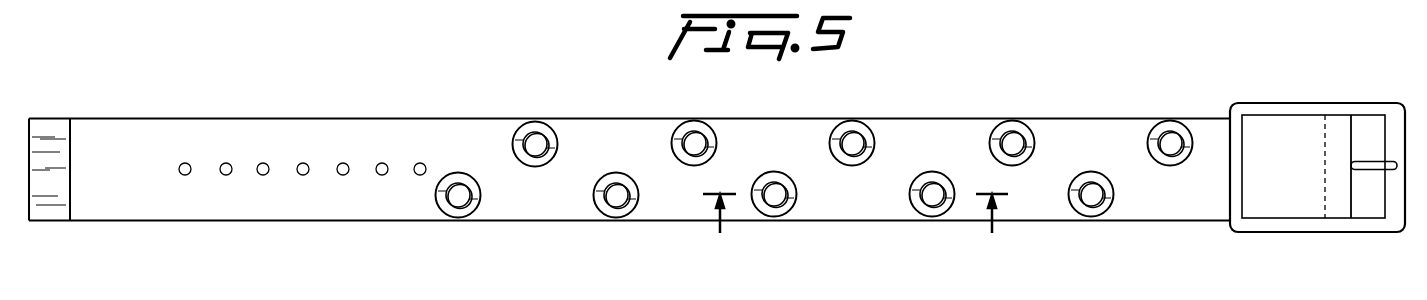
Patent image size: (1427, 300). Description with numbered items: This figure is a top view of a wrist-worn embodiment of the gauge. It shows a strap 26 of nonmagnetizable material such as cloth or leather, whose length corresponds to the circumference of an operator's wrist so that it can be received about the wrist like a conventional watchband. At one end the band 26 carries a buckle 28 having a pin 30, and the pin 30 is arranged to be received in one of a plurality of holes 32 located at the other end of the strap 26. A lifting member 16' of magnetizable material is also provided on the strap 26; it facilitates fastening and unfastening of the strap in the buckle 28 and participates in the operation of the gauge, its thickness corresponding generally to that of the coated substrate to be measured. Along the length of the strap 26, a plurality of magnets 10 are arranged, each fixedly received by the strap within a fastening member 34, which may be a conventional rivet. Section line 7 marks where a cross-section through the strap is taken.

The magnet 10 is at (538, 134).
The lifting member 16' is at (70, 139).
The strap 26 is at (923, 118).
The buckle 28 is at (1283, 103).
The pin 30 is at (1375, 172).
The holes 32 is at (187, 165).
The fastening member 34 is at (553, 131).
The section line 7- 7 is at (855, 202).